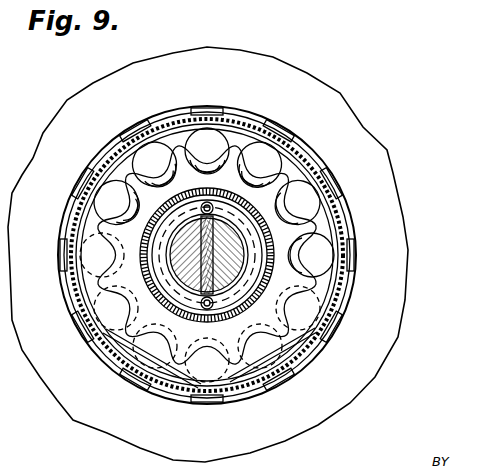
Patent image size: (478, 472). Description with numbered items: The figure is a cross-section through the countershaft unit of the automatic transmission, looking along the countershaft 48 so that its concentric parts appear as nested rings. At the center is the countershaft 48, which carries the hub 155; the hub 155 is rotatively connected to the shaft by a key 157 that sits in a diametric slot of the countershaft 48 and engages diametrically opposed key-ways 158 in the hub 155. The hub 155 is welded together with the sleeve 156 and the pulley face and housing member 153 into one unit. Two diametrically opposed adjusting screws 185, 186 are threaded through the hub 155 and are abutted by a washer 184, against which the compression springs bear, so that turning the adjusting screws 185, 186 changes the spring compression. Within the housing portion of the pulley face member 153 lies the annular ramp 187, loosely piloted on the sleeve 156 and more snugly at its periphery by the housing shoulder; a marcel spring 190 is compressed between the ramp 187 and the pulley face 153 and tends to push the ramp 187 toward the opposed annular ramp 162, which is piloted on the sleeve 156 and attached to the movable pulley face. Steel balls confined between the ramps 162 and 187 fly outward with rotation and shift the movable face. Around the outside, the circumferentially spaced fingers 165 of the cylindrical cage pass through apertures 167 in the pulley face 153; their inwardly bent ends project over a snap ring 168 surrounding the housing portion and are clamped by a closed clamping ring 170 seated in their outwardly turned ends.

The countershaft 48 is at (190, 240).
The pulley face and housing member 153 is at (403, 240).
The hub 155 is at (103, 333).
The sleeve 156 is at (113, 170).
The key 157 is at (225, 270).
The key-ways 158 is at (230, 230).
The annular ramp 162 is at (180, 130).
The fingers 165 is at (285, 128).
The apertures 167 is at (243, 92).
The snap ring 168 is at (348, 287).
The clamping ring 170 is at (322, 353).
The washer 184 is at (177, 293).
The adjusting screw 185 is at (207, 204).
The adjusting screw 186 is at (207, 305).
The annular ramp 187 is at (88, 252).
The marcel spring 190 is at (255, 358).